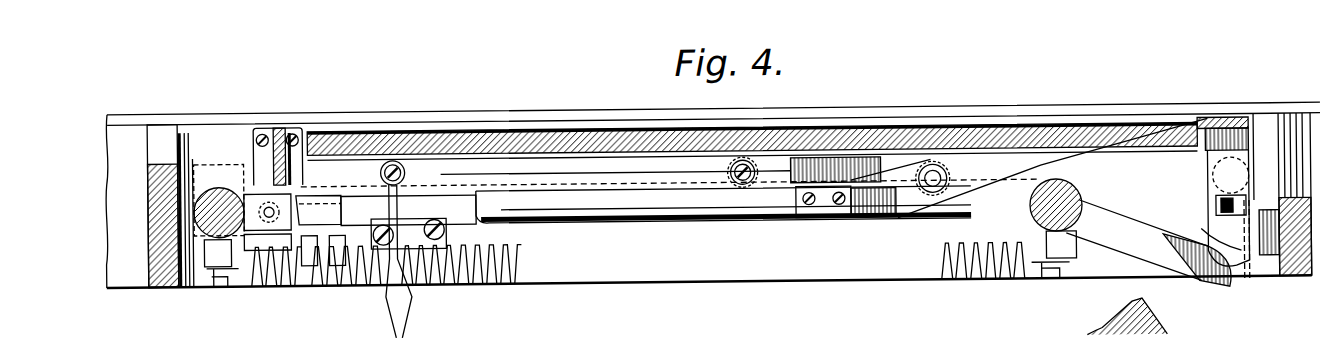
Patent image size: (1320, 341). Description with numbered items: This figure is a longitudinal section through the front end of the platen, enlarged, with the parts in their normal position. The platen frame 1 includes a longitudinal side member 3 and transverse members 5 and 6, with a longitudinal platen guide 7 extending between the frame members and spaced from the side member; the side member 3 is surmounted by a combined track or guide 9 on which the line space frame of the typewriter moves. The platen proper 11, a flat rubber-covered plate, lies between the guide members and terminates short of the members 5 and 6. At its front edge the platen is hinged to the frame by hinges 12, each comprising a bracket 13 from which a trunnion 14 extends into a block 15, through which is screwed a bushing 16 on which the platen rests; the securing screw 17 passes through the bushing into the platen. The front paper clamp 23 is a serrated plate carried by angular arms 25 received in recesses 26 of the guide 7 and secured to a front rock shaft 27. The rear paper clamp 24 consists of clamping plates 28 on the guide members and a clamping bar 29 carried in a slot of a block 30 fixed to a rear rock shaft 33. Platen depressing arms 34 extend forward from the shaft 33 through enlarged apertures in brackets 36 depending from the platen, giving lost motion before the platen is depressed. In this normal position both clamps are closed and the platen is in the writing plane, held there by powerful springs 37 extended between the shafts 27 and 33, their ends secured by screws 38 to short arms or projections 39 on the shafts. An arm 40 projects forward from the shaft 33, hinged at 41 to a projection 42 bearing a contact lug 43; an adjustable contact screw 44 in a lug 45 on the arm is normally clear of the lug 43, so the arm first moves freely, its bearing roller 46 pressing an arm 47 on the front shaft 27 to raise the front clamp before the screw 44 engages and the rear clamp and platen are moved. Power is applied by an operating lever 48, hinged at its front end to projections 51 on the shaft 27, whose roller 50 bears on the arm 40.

The platen frame 1 is at (1290, 282).
The longitudinal side member 3 is at (134, 289).
The transverse member 5 is at (147, 176).
The transverse member 6 is at (1240, 79).
The longitudinal platen guide 7 is at (411, 108).
The combined track or guide 9 is at (497, 114).
The platen proper 11 is at (568, 134).
The hinge 12 is at (1230, 235).
The bracket 13 is at (1250, 225).
The trunnion 14 is at (1210, 186).
The block 15 is at (1215, 207).
The bushing 16 is at (1220, 215).
The securing screw 17 is at (1200, 238).
The front paper clamp 23 is at (1210, 129).
The rear paper clamp 24 is at (262, 128).
The angular arm 25 is at (1100, 222).
The recess 26 is at (1086, 171).
The front rock shaft 27 is at (1040, 196).
The clamping plate 28 is at (293, 128).
The clamping bar 29 is at (258, 145).
The block 30 is at (212, 166).
The rear rock shaft 33 is at (192, 221).
The platen depressing arm 34 is at (352, 200).
The bracket 36 is at (456, 290).
The spring 37 is at (530, 249).
The screw 38 is at (216, 290).
The short arm or projection 39 is at (205, 248).
The arm 40 is at (514, 196).
The hinge 41 is at (270, 200).
The projection 42 is at (256, 196).
The contact lug 43 is at (244, 268).
The adjustable contact screw 44 is at (279, 290).
The lug or projection 45 is at (326, 290).
The bearing roller 46 is at (948, 184).
The arm 47 is at (897, 222).
The operating lever 48 is at (478, 177).
The roller 50 is at (727, 179).
The projection 51 is at (978, 254).